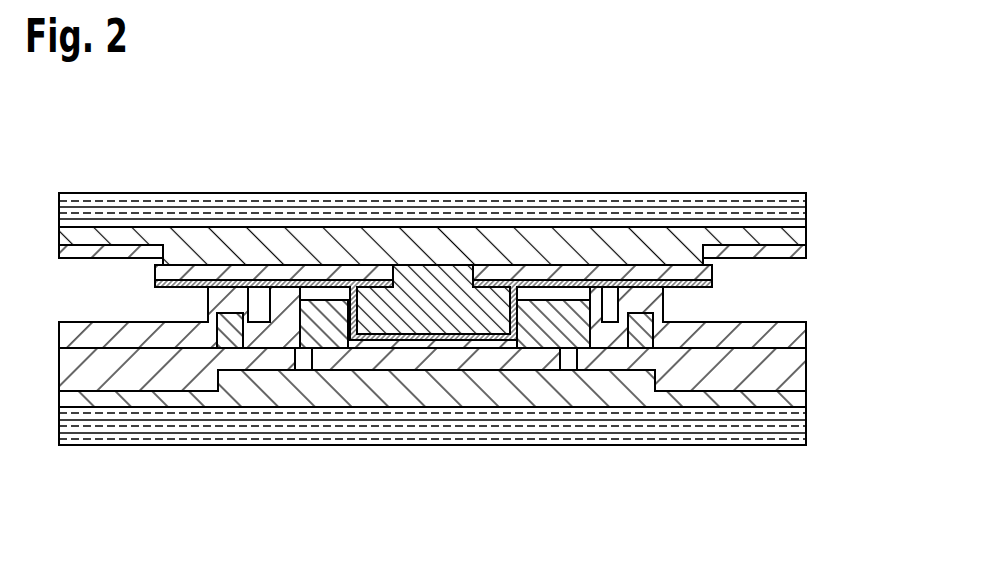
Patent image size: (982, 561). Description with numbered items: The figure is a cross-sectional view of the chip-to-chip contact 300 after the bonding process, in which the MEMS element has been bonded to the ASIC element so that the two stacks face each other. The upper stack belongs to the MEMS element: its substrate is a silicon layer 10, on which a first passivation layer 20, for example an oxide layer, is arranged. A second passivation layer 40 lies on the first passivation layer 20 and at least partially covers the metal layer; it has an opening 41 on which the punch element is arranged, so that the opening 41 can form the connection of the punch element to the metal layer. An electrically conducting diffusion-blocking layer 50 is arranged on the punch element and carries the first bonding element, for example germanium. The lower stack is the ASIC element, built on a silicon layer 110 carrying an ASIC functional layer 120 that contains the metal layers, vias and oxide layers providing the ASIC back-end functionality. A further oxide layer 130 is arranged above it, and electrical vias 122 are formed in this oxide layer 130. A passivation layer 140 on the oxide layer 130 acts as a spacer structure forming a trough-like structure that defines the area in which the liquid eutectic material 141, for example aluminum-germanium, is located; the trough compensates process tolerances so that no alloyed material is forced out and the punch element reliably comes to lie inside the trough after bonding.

The sensor package assembly 300 is at (111, 171).
The silicon layer 10 is at (800, 209).
The first passivation layer 20 is at (800, 238).
The second passivation layer 40 is at (800, 252).
The opening 41 is at (408, 277).
The diffusion-blocking layer 50 is at (712, 286).
The passivation layer 140 is at (800, 333).
The liquid eutectic material 141 is at (547, 317).
The oxide layer 130 is at (800, 363).
The ASIC functional layer 120 is at (800, 398).
The electrical vias 122 is at (315, 368).
The silicon layer 110 is at (800, 430).